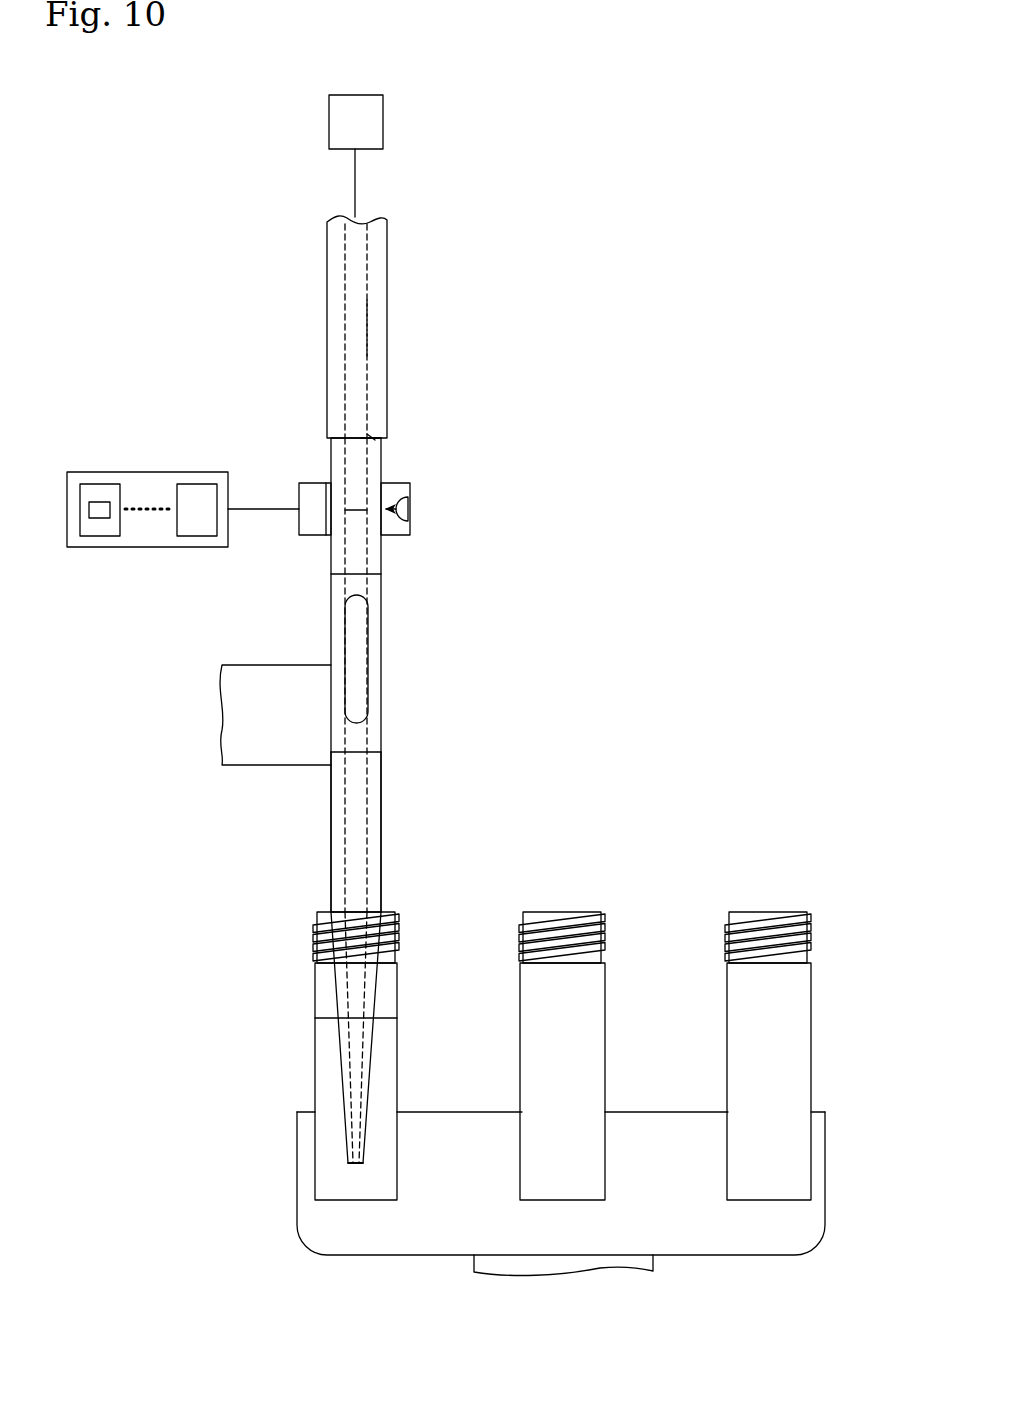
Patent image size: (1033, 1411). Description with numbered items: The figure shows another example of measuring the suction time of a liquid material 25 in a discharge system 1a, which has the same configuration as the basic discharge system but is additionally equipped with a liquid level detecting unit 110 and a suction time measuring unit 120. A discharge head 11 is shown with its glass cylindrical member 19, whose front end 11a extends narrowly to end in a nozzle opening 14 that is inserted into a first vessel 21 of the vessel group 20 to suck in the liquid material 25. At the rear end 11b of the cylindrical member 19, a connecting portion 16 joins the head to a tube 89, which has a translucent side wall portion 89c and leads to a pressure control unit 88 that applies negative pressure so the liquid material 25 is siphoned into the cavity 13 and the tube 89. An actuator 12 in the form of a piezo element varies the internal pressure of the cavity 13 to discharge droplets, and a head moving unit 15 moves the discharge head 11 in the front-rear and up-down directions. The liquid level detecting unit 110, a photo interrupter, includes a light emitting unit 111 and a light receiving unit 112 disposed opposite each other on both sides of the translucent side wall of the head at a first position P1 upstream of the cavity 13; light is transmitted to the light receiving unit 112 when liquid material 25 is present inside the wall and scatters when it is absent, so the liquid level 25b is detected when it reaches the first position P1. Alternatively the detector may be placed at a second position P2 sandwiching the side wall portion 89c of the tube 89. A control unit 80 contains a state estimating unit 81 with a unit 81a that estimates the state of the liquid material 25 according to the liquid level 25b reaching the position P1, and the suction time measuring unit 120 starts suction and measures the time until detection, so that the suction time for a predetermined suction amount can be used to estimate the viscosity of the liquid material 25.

The discharge system 1a is at (505, 215).
The pressure control unit 88 is at (370, 128).
The tube 89 is at (326, 313).
The translucent side wall portion of tube 89c is at (374, 331).
The second position P2 is at (390, 264).
The discharge head 11 is at (398, 674).
The rear end of cylindrical member 11b is at (372, 436).
The connecting portion 16 is at (374, 438).
The liquid level 25b is at (357, 513).
The actuator 12 is at (372, 623).
The cavity 13 is at (360, 665).
The cylindrical member 19 is at (383, 825).
The nozzle opening 14 is at (351, 1166).
The front end of cylindrical member 11a is at (358, 1170).
The liquid level detecting unit 110 is at (392, 477).
The light emitting unit 111 is at (400, 482).
The light receiving unit 112 is at (305, 483).
The first position P1 is at (419, 509).
The control unit 80 is at (146, 495).
The state estimating unit 81 is at (97, 484).
The estimating unit 81a is at (99, 518).
The suction time measuring unit 120 is at (185, 489).
The head moving unit 15 is at (237, 714).
The vessel group 20 is at (489, 1035).
The first vessel 21 is at (315, 1076).
The liquid material 25 is at (327, 1052).